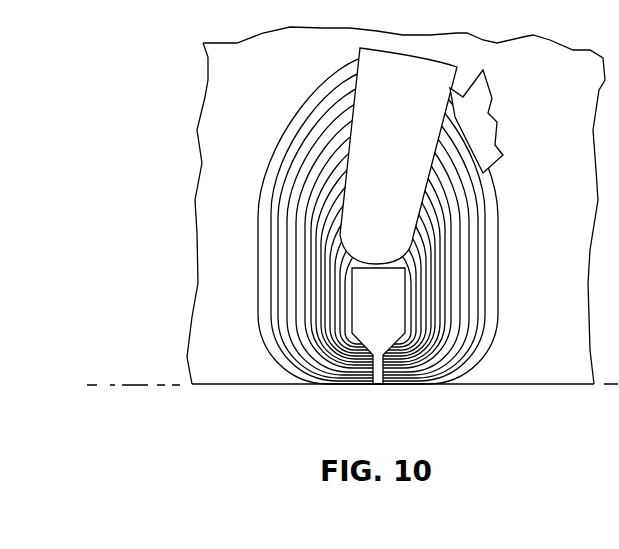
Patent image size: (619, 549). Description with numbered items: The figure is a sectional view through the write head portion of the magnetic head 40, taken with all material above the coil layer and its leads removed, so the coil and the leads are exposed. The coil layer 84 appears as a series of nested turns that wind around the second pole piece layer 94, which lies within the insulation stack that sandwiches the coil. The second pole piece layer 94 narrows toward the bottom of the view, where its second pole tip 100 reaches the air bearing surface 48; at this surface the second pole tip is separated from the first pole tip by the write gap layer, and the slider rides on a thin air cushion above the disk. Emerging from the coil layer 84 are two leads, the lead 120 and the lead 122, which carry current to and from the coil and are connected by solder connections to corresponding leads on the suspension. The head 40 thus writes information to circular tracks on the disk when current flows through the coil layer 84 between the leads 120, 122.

The magnetic head 40 is at (516, 201).
The air bearing surface (ABS) 48 is at (136, 384).
The coil layer 84 is at (475, 288).
The second pole piece layer 94 is at (390, 317).
The second pole tip 100 is at (378, 384).
The lead 120 is at (400, 152).
The lead 122 is at (490, 118).